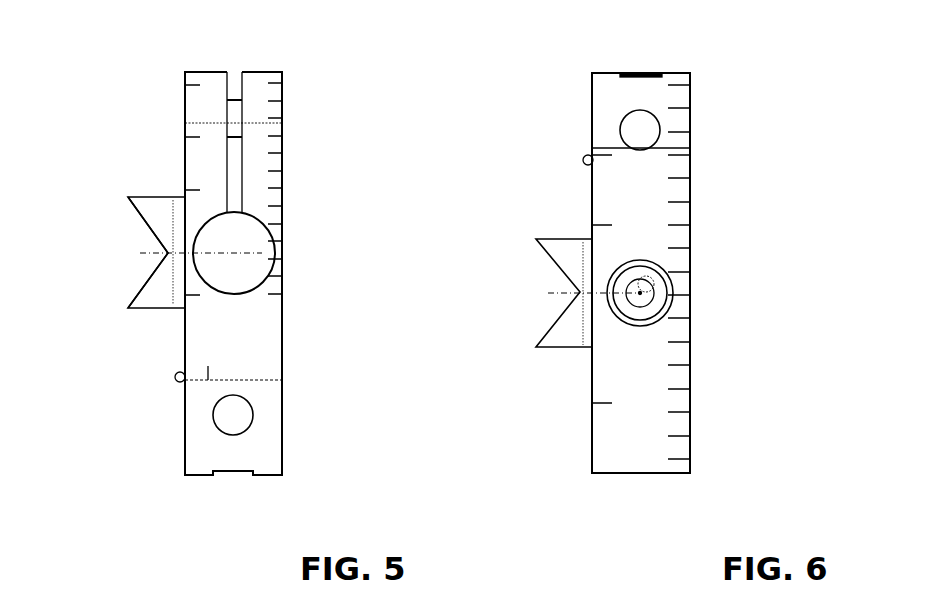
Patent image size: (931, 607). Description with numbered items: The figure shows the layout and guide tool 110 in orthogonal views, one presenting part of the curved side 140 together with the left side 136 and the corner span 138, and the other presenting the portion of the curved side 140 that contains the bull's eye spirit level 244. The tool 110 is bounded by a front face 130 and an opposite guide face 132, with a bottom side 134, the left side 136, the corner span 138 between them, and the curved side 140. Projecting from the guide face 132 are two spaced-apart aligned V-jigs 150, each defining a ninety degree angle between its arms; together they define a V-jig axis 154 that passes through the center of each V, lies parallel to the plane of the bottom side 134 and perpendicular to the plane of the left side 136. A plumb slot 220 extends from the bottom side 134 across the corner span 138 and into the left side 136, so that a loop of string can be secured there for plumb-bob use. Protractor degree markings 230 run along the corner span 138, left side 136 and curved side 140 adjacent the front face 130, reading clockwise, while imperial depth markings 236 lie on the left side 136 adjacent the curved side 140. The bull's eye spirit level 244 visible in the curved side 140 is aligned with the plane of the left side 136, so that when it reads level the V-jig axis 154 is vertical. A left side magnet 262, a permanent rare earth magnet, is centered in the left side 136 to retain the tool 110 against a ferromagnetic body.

In FIG. 5, the layout and guide tool 110 is at (262, 488).
In FIG. 6, the layout and guide tool 110 is at (705, 500).
In FIG. 5, the front face 130 is at (168, 350).
In FIG. 6, the front face 130 is at (588, 128).
In FIG. 5, the guide face 132 is at (293, 318).
In FIG. 6, the guide face 132 is at (697, 137).
In FIG. 5, the bottom side 134 is at (190, 63).
In FIG. 6, the bottom side 134 is at (612, 483).
In FIG. 5, the left side 136 is at (268, 183).
In FIG. 5, the corner span 138 is at (250, 93).
In FIG. 5, the curved side 140 is at (205, 400).
In FIG. 6, the curved side 140 is at (615, 390).
In FIG. 5, the V-jig 150 is at (160, 185).
In FIG. 6, the V-jig 150 is at (560, 275).
In FIG. 5, the V-jig axis 154 is at (138, 262).
In FIG. 5, the plumb slot 220 is at (237, 70).
In FIG. 5, the protractor degree markings 230 is at (200, 130).
In FIG. 5, the imperial depth markings 236 is at (253, 375).
In FIG. 6, the bull's eye spirit level 244 is at (612, 290).
In FIG. 5, the left side magnet 262 is at (242, 270).